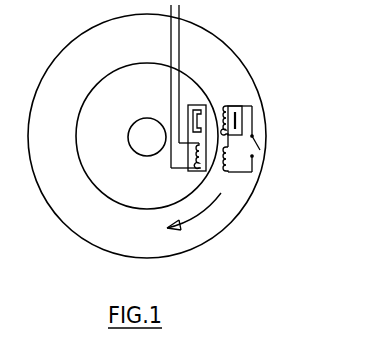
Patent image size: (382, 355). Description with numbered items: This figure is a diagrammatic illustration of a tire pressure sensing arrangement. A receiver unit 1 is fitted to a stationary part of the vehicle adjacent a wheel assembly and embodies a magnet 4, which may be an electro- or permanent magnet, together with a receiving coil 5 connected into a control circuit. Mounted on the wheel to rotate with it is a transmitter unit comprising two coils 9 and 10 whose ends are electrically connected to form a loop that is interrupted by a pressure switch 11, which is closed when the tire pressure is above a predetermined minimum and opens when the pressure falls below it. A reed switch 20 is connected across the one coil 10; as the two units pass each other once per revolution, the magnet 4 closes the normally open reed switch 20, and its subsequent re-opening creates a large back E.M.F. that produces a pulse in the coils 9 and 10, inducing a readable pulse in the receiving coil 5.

The receiver unit 1 is at (227, 188).
The magnet 4 is at (195, 109).
The receiving coil 5 is at (198, 166).
The coil 9 is at (228, 173).
The coil 10 is at (227, 106).
The pressure switch 11 is at (257, 150).
The reed switch 20 is at (238, 122).